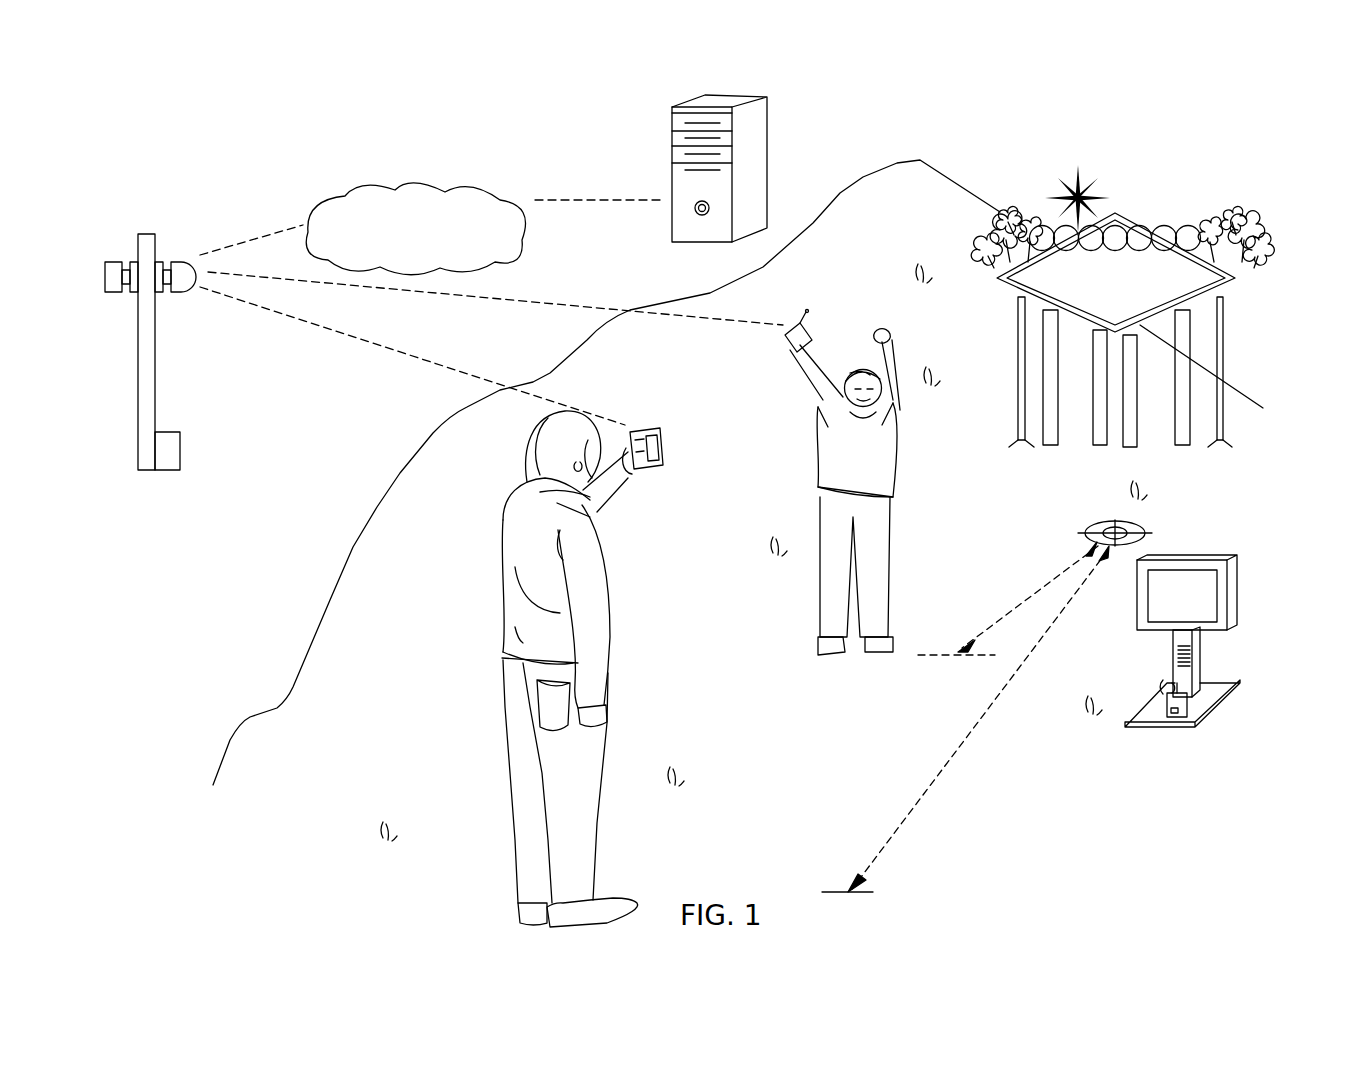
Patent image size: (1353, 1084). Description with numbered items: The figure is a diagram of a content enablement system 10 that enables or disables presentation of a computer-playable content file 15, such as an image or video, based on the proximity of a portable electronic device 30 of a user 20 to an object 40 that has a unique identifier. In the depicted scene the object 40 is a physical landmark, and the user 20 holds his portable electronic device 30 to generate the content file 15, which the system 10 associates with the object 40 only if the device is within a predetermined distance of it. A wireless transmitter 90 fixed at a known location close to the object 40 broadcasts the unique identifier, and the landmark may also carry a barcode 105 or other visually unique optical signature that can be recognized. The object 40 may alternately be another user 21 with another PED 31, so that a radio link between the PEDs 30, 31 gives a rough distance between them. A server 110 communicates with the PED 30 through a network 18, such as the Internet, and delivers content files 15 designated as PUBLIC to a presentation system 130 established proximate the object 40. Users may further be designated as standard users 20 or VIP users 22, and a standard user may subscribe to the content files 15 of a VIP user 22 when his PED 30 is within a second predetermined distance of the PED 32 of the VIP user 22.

The content enablement system 10 is at (906, 134).
The content file 15 is at (657, 430).
The network 18 is at (415, 180).
The user 20 is at (512, 518).
The another user 21 is at (848, 483).
The VIP user 22 is at (885, 485).
The portable electronic device 30 is at (680, 440).
The another PED 31 is at (759, 344).
The PED of the VIP user 32 is at (790, 346).
The object 40 is at (1140, 225).
The wireless transmitter 90 is at (1205, 690).
The barcode 105 is at (1172, 657).
The server 110 is at (760, 157).
The presentation system 130 is at (1212, 592).